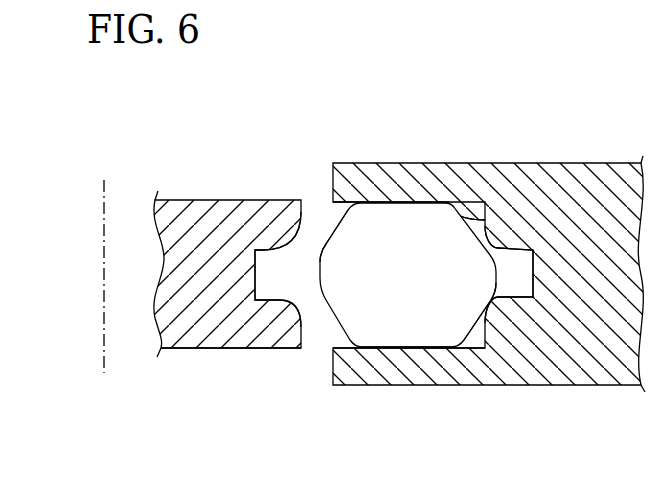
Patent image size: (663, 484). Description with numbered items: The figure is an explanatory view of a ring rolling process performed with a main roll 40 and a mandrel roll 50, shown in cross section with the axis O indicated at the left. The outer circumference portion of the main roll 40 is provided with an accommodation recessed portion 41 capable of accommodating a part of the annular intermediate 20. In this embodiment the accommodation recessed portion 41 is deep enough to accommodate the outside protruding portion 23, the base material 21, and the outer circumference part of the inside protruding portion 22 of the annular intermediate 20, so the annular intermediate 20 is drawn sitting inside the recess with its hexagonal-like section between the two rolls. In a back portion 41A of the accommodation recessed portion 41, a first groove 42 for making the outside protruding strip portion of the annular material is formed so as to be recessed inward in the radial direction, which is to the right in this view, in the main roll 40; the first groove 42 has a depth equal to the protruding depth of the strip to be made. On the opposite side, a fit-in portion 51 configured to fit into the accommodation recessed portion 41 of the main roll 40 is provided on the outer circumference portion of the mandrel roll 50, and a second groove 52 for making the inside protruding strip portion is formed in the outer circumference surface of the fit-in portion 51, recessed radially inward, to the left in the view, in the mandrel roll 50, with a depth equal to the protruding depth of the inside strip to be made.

The annular intermediate 20 is at (398, 299).
The base material 21 is at (378, 336).
The inside protruding portion 22 is at (330, 252).
The outside protruding portion 23 is at (476, 307).
The main roll 40 is at (456, 252).
The accommodation recessed portion 41 is at (331, 346).
The back portion 41A is at (448, 203).
The first groove 42 is at (518, 281).
The mandrel roll 50 is at (233, 266).
The fit-in portion 51 is at (215, 333).
The second groove 52 is at (255, 268).
The central axis O is at (104, 190).